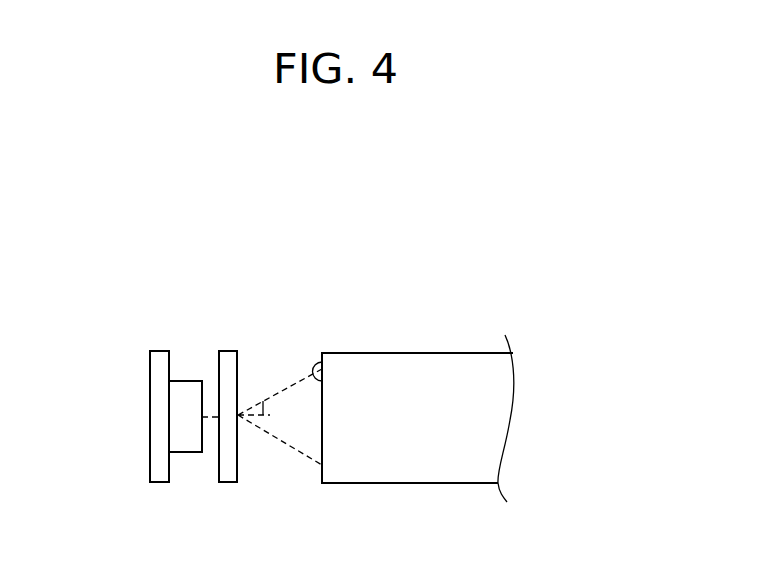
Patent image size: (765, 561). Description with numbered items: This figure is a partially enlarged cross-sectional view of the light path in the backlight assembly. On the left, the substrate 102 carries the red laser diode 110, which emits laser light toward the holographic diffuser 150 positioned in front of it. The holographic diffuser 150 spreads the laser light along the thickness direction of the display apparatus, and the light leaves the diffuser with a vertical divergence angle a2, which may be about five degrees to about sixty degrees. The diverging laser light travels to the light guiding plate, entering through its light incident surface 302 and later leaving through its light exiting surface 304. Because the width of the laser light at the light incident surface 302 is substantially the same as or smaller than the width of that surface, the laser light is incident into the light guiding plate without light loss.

The substrate 102 is at (159, 475).
The red laser diode 110 is at (178, 412).
The holographic diffuser 150 is at (228, 475).
The vertical divergence angle a2 is at (266, 409).
The light incident surface 302 is at (312, 368).
The light exiting surface 304 is at (425, 352).